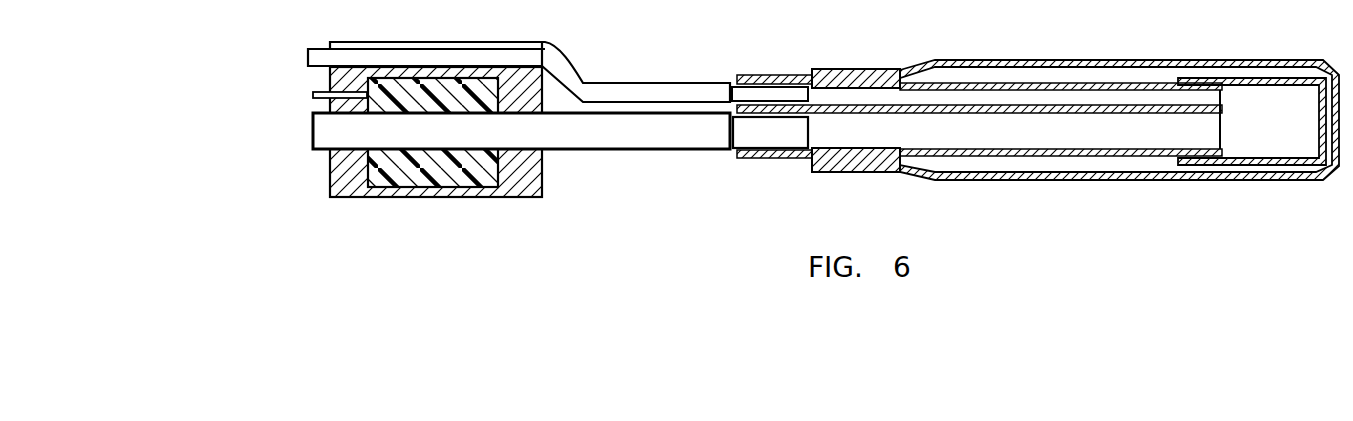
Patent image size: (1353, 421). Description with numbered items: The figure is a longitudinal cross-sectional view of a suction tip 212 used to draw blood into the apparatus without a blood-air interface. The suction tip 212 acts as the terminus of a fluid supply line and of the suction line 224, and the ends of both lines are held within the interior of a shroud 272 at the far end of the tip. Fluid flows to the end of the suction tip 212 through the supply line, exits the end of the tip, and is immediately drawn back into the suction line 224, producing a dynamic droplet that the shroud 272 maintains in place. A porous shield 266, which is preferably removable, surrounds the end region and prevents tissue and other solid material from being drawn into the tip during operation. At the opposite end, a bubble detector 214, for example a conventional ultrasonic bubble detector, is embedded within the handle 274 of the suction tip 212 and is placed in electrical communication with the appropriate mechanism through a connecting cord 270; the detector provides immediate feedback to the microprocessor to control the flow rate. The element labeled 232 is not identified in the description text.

The suction tip 212 is at (757, 240).
The bubble detector 214 is at (450, 168).
The suction line 224 is at (773, 137).
The tube 232 is at (668, 90).
The porous shield 266 is at (1043, 178).
The connecting cord 270 is at (318, 90).
The shroud 272 is at (1255, 165).
The handle 274 is at (333, 193).